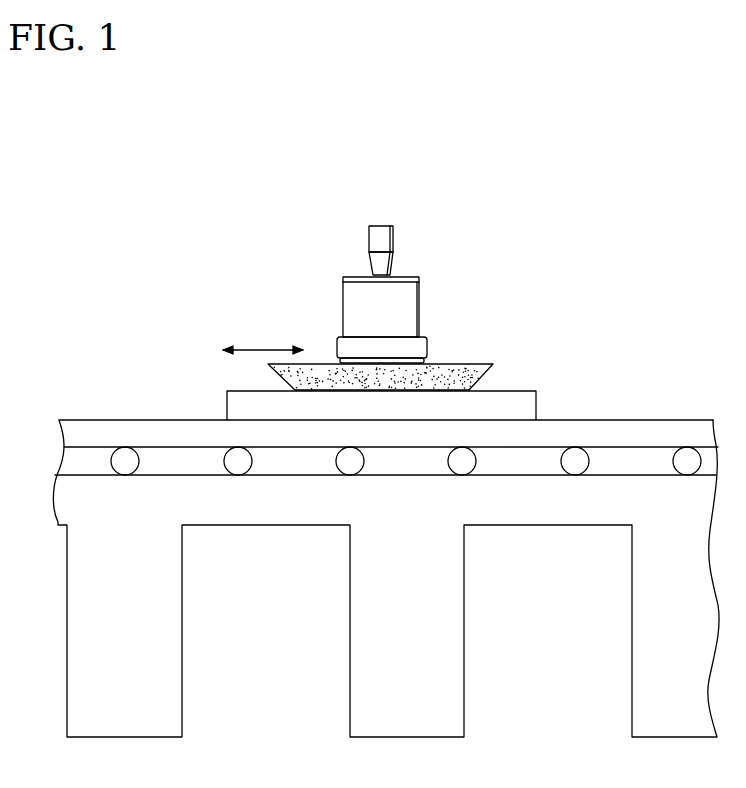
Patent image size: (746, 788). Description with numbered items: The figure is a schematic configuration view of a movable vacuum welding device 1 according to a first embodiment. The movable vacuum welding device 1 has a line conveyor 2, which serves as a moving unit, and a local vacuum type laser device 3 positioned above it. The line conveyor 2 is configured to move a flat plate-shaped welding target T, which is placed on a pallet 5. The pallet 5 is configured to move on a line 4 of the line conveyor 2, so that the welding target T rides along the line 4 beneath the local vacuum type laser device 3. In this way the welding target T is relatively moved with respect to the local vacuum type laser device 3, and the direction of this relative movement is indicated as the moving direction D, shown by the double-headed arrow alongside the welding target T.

The movable vacuum welding device 1 is at (159, 186).
The line conveyor 2 is at (88, 415).
The local vacuum type laser device 3 is at (430, 282).
The line 4 is at (158, 432).
The pallet 5 is at (526, 406).
The welding target T is at (463, 372).
The moving direction D is at (263, 338).